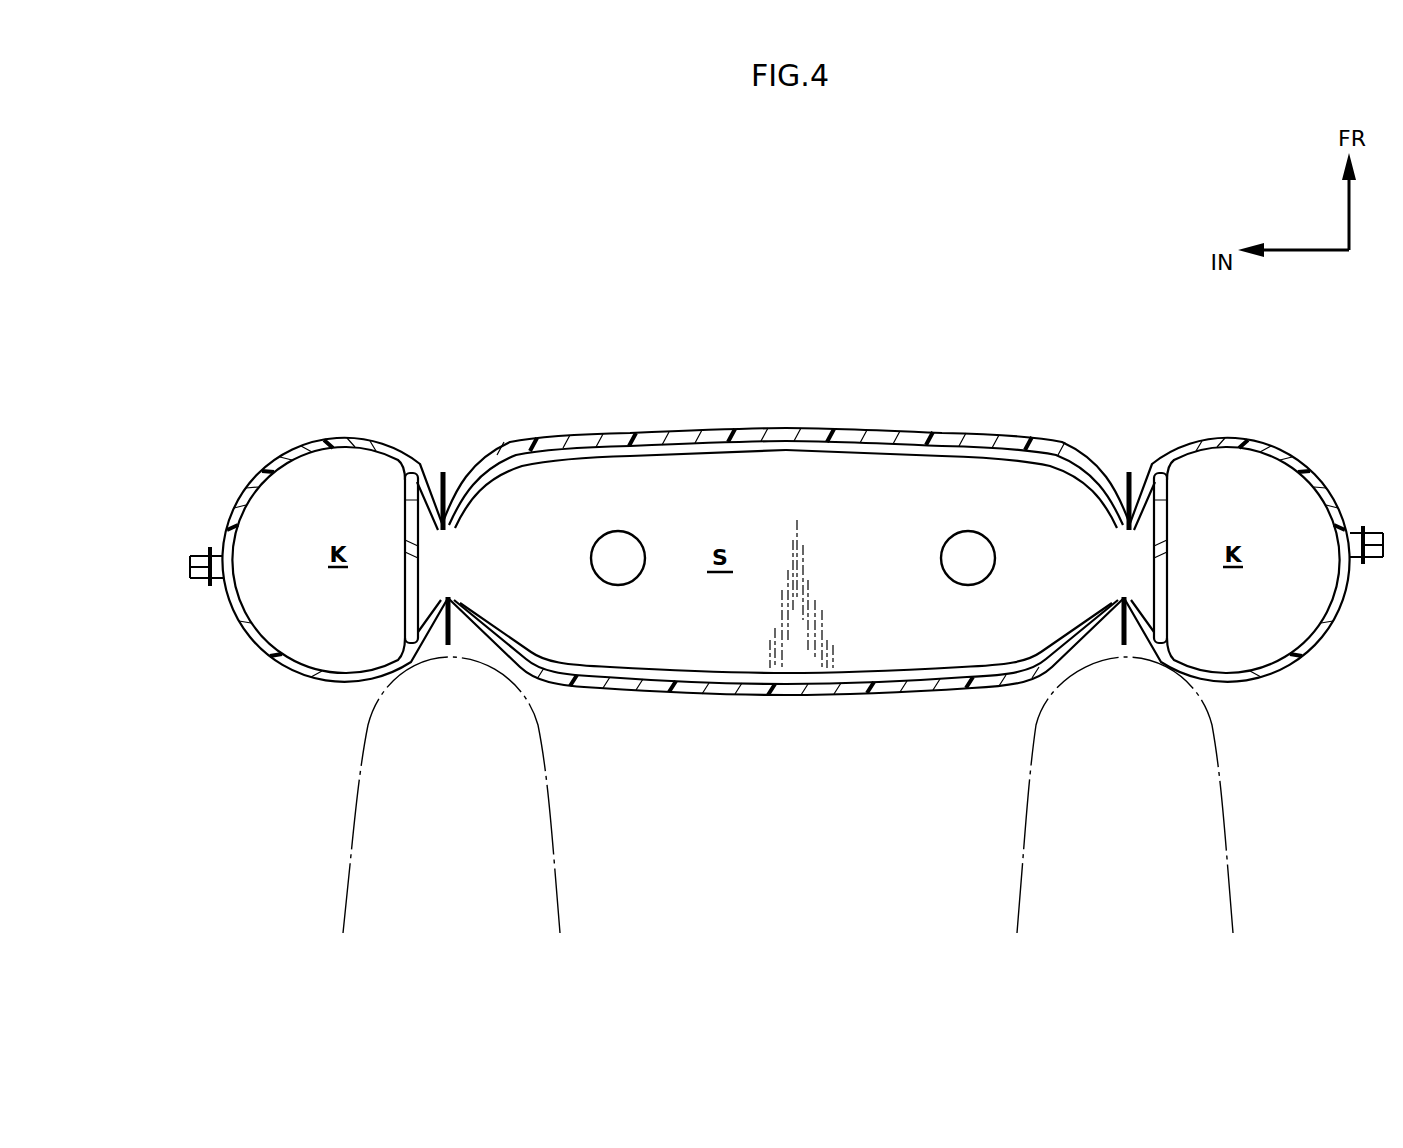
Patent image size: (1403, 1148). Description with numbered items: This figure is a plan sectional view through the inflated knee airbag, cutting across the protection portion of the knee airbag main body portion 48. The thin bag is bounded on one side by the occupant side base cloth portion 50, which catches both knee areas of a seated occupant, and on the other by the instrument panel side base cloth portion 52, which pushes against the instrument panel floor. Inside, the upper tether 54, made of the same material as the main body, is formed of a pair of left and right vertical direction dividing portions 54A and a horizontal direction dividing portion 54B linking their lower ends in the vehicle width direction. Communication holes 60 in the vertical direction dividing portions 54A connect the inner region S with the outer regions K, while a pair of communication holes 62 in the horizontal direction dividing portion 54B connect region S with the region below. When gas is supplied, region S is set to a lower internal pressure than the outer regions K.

The knee airbag main body portion 48 is at (1002, 411).
The instrument panel side base cloth portion 52 is at (895, 432).
The occupant side base cloth portion 50 is at (937, 690).
The upper tether 54 is at (761, 687).
The vertical direction dividing portions 54A is at (412, 607).
The horizontal direction dividing portion 54B is at (672, 488).
The communication holes 60 is at (410, 575).
The communication holes 62 is at (606, 572).